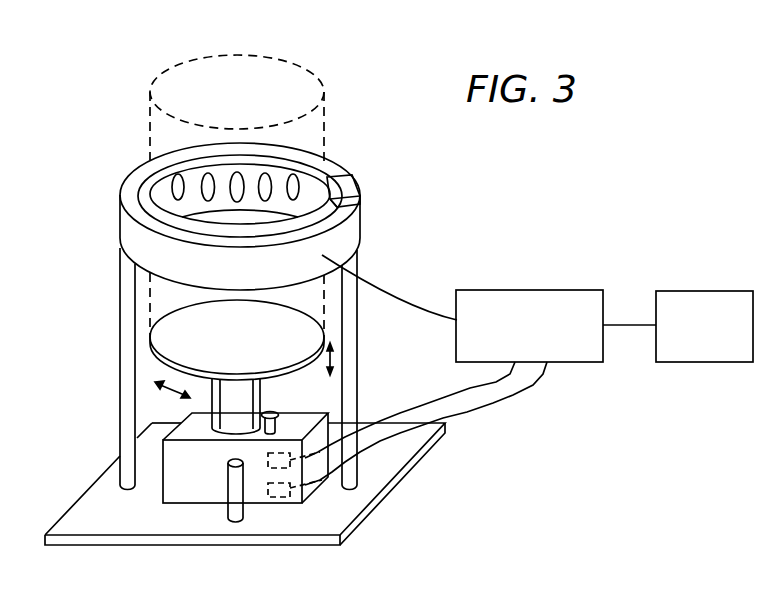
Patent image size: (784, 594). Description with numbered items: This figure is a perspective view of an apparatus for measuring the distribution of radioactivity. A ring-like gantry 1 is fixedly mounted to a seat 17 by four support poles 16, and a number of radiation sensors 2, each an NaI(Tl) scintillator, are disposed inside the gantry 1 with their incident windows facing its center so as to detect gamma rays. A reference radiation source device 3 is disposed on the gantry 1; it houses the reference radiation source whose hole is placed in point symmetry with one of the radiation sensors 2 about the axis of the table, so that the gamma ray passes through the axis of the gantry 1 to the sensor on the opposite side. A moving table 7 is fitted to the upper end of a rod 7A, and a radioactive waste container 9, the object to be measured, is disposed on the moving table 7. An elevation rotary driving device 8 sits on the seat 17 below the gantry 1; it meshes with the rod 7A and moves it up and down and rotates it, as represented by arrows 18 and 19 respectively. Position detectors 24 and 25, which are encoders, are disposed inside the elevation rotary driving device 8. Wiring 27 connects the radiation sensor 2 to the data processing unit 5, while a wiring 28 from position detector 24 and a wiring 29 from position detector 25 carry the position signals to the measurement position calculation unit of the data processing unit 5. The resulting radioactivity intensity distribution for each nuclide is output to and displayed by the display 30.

The gantry 1 is at (132, 242).
The radiation sensor 2 is at (178, 187).
The reference radiation source device 3 is at (350, 186).
The data processing unit 5 is at (544, 290).
The moving table 7 is at (152, 357).
The rod 7A is at (245, 401).
The elevation rotary driving device 8 is at (173, 465).
The radioactive waste container 9 is at (168, 82).
The support poles 16 is at (120, 300).
The seat 17 is at (385, 460).
The arrow 18 is at (347, 369).
The arrow 19 is at (170, 396).
The position detector 24 is at (278, 497).
The position detector 25 is at (268, 461).
The wiring 27 is at (397, 295).
The wiring 28 is at (470, 420).
The wiring 29 is at (450, 392).
The display 30 is at (712, 290).